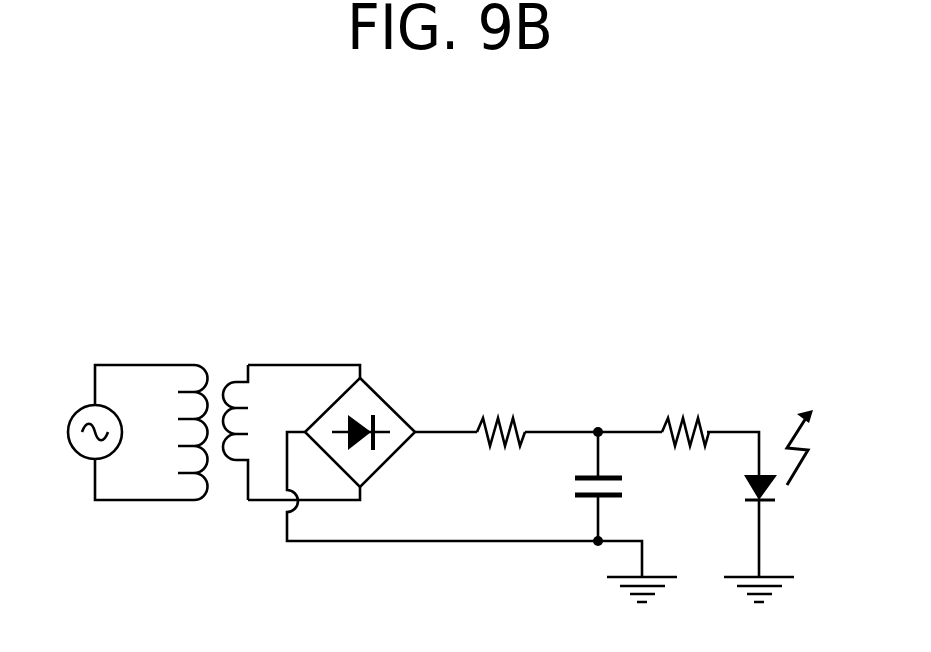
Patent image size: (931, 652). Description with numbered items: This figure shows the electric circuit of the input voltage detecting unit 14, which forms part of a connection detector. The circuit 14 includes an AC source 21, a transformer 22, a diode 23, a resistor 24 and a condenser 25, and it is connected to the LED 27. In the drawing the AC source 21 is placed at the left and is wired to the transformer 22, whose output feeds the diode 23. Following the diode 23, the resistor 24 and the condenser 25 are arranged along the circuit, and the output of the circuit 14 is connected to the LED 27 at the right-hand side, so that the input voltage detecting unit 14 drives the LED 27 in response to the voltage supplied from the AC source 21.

The input voltage detecting unit 14 is at (503, 318).
The AC source 21 is at (78, 408).
The transformer 22 is at (193, 501).
The diode 23 is at (391, 403).
The resistor 24 is at (512, 421).
The condenser 25 is at (638, 492).
The LED 27 is at (792, 500).